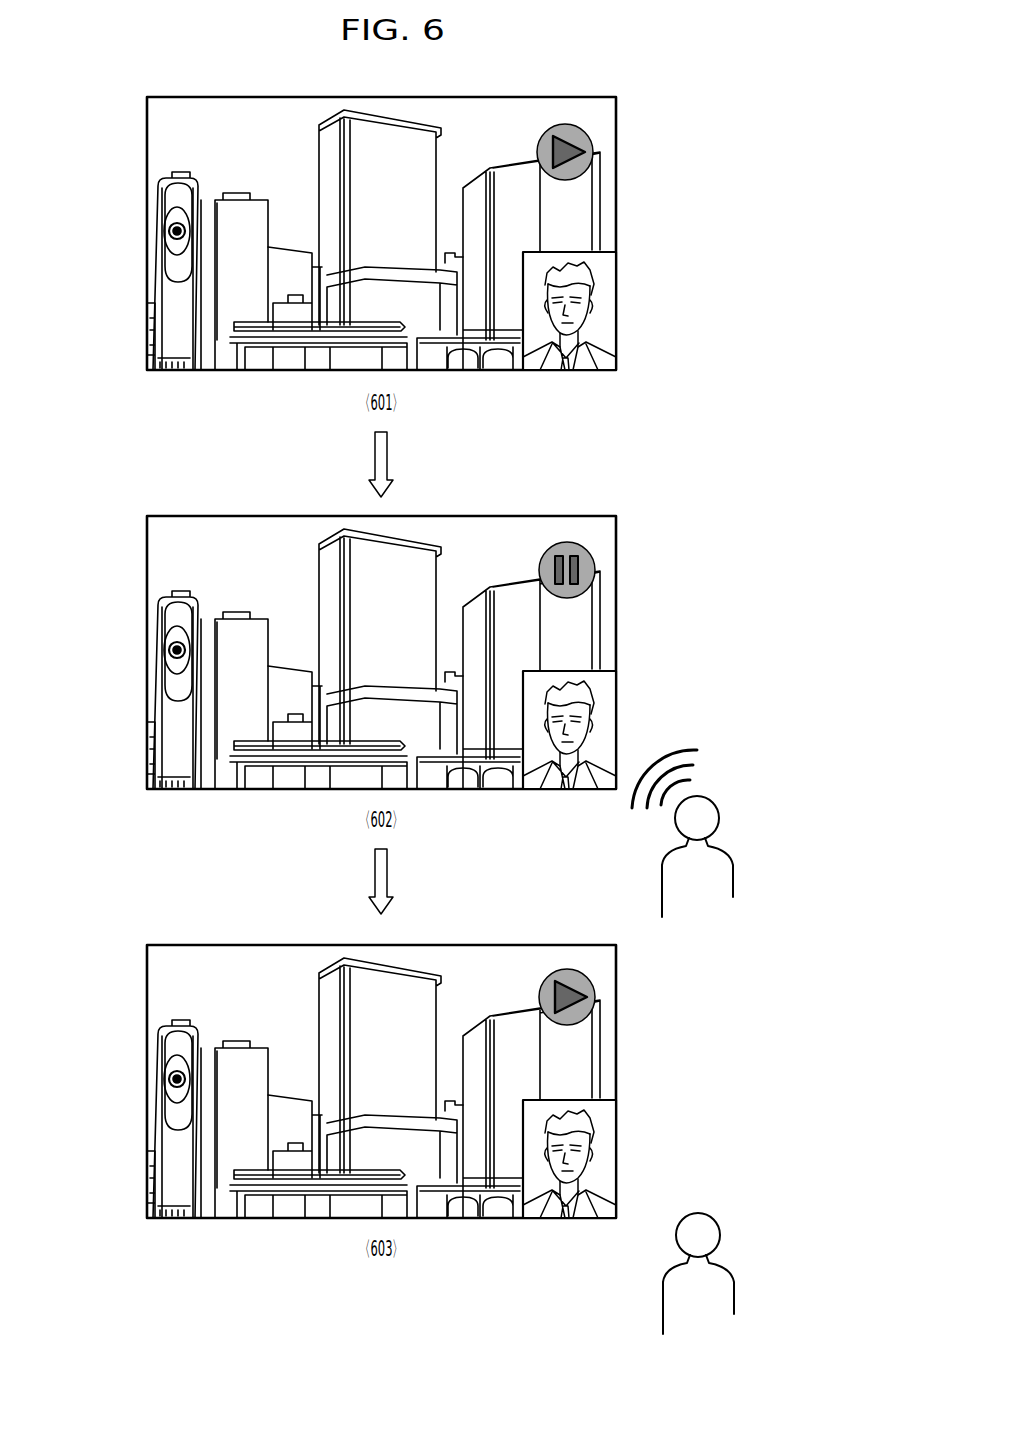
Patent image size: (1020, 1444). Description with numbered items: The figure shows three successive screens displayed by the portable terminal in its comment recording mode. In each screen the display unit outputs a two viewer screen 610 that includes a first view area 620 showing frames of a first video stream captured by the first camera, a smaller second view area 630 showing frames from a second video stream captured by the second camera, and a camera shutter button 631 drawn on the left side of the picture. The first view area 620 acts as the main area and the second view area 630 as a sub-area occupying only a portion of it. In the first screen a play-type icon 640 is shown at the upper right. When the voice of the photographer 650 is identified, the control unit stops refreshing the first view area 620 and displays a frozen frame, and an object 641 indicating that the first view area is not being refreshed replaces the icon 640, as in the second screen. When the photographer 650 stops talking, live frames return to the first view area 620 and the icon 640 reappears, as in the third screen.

The two viewer screen 610 is at (573, 97).
The first view area 620 is at (580, 213).
The second view area 630 is at (597, 319).
The camera shutter button 631 is at (165, 231).
The play icon 640 is at (572, 148).
The object indicating that the first view area is not being refreshed 641 is at (574, 566).
The photographer 650 is at (708, 815).